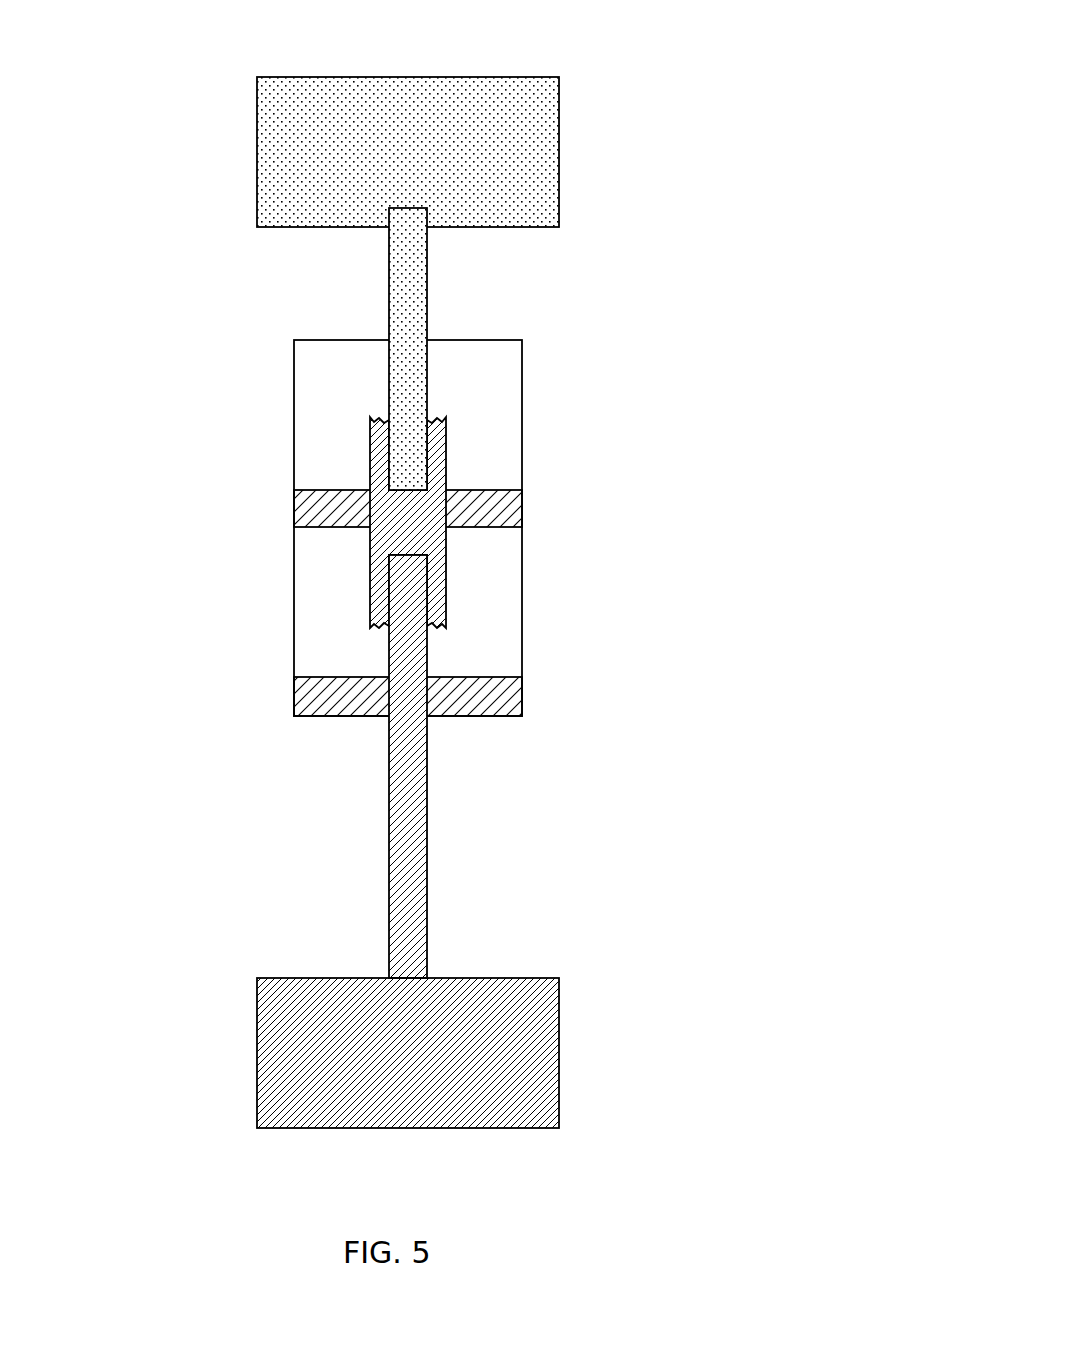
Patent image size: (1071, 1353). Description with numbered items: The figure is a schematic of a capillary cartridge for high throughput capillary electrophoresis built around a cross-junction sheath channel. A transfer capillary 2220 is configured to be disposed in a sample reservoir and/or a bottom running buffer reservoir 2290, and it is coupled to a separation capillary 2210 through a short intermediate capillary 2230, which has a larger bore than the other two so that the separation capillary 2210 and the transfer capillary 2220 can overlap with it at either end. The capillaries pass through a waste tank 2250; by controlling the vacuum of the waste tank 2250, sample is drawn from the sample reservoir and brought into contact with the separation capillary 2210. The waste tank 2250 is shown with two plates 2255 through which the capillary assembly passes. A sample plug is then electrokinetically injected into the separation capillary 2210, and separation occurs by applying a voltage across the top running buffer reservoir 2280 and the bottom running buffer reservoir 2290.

The top running buffer reservoir 2280 is at (520, 152).
The separation capillary 2210 is at (405, 283).
The waste tank 2250 is at (294, 583).
The bearing plates 2255 is at (493, 509).
The intermediate capillary 2230 is at (447, 565).
The transfer capillary 2220 is at (408, 658).
The bottom running buffer reservoir 2290 is at (324, 1023).